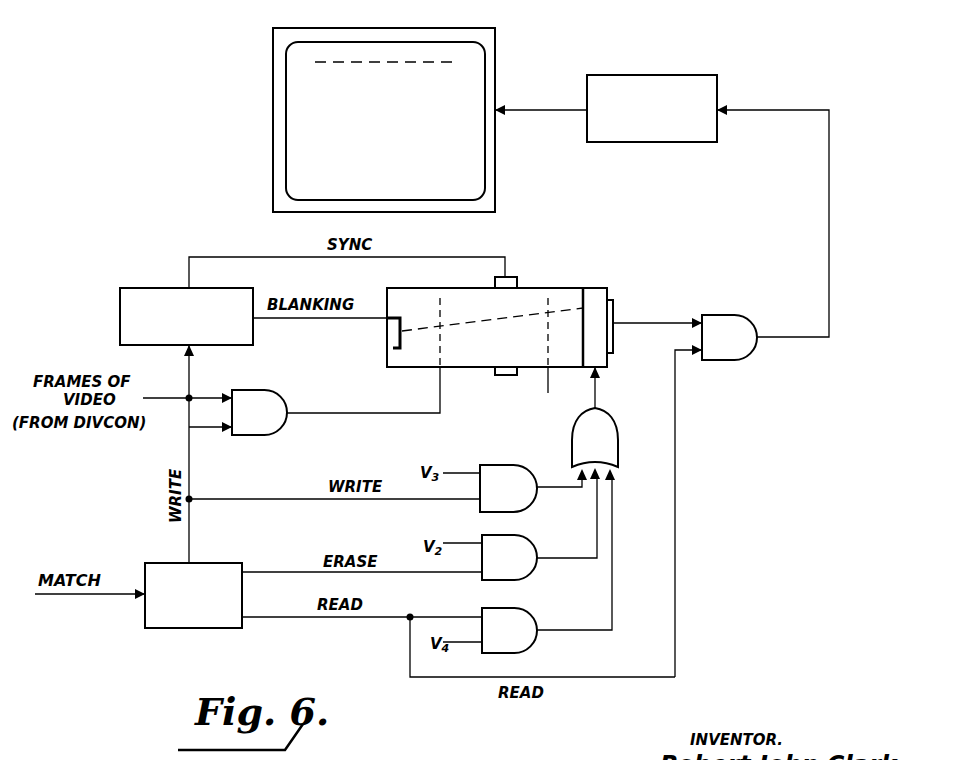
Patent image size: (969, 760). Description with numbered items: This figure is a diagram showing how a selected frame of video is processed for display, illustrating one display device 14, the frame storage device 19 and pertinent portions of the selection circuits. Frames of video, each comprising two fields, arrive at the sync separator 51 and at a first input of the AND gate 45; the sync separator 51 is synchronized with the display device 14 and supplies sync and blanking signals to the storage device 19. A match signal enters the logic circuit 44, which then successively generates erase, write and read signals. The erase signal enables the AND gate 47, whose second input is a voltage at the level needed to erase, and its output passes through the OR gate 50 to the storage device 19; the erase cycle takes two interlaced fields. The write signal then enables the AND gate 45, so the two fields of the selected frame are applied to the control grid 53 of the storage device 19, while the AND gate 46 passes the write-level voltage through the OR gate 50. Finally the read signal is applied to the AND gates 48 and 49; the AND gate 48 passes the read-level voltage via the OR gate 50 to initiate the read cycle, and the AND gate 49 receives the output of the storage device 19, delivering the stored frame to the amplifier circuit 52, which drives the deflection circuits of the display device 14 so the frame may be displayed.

The display device 14 is at (273, 60).
The amplifier circuit 52 is at (682, 74).
The sync separator 51 is at (160, 287).
The frame storage device 19 is at (527, 300).
The control grid 53 is at (440, 383).
The fifth AND gate 49 is at (726, 314).
The first AND gate 45 is at (270, 392).
The OR gate 50 is at (610, 418).
The second AND gate 46 is at (511, 465).
The third AND gate 47 is at (519, 535).
The fourth AND gate 48 is at (532, 608).
The logic circuit 44 is at (189, 630).